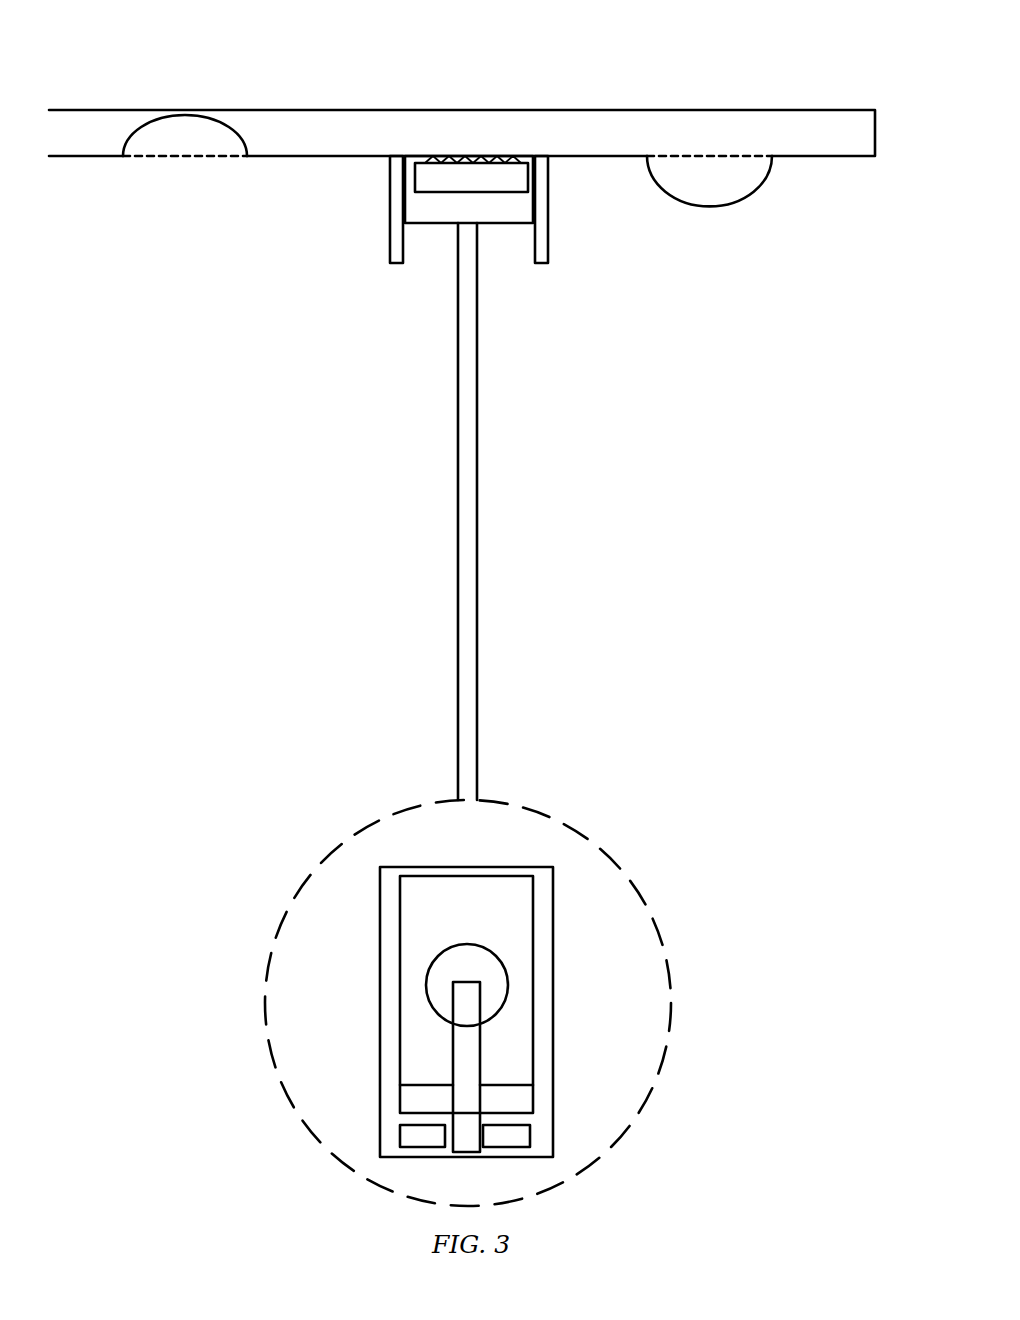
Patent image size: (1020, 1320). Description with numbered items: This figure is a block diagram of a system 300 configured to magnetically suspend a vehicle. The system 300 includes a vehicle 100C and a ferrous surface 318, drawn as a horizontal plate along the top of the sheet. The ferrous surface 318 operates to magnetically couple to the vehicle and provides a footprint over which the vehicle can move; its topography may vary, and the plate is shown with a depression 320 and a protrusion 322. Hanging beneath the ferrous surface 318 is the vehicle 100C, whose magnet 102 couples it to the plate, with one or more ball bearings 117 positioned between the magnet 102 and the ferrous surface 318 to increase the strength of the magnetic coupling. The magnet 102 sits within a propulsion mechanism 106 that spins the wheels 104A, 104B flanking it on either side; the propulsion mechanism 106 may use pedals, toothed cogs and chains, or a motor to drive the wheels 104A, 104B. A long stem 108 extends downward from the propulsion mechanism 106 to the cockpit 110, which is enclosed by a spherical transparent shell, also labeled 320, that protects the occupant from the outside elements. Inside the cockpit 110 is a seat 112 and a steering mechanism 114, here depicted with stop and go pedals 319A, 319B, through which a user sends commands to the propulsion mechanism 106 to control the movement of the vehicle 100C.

The system 300 is at (272, 79).
The ferrous surface 318 is at (366, 110).
The depression 320 is at (197, 138).
The protrusion 322 is at (727, 172).
The ball bearings 117 is at (505, 157).
The vehicle 100C is at (176, 293).
The magnet 102 is at (510, 172).
The wheel 104A is at (542, 242).
The wheel 104B is at (392, 252).
The propulsion mechanism 106 is at (438, 212).
The stem 108 is at (472, 465).
The cockpit 110 is at (347, 860).
The seat 112 is at (420, 952).
The steering mechanism 114 is at (447, 1008).
The stop pedal 319A is at (518, 1140).
The go pedal 319B is at (413, 1140).